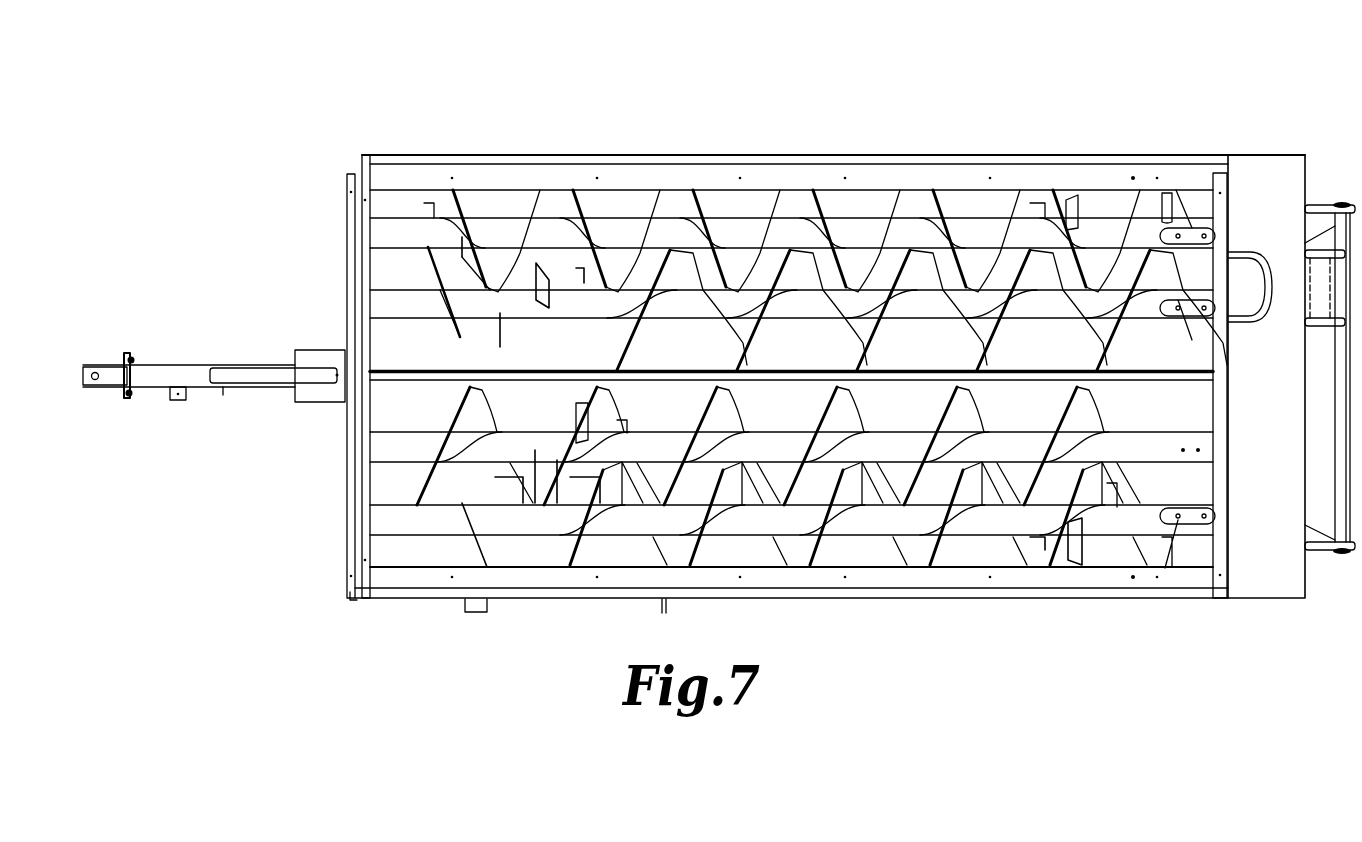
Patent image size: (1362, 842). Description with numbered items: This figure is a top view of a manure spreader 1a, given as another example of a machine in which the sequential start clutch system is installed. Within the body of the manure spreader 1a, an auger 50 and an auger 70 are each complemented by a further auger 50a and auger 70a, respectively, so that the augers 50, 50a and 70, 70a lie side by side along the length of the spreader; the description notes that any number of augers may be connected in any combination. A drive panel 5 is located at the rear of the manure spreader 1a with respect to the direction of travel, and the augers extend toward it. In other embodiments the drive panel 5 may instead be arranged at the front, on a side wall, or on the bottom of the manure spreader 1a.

The manure spreader 1a is at (983, 111).
The drive panel 5 is at (1222, 480).
The auger 70 is at (497, 222).
The auger 70a is at (569, 309).
The auger 50a is at (517, 440).
The auger 50 is at (537, 525).